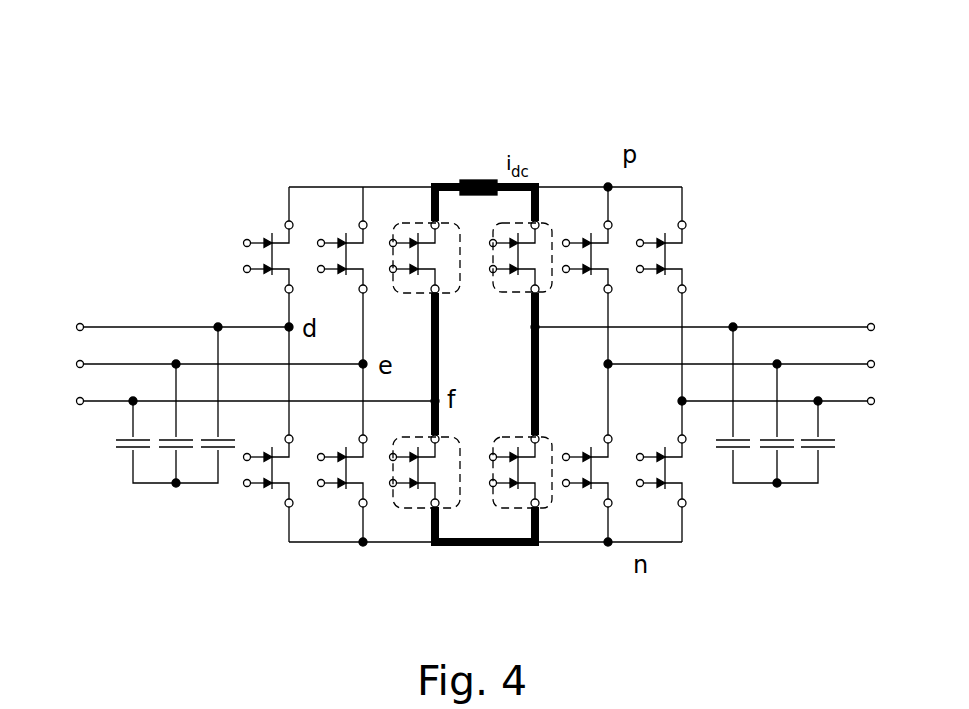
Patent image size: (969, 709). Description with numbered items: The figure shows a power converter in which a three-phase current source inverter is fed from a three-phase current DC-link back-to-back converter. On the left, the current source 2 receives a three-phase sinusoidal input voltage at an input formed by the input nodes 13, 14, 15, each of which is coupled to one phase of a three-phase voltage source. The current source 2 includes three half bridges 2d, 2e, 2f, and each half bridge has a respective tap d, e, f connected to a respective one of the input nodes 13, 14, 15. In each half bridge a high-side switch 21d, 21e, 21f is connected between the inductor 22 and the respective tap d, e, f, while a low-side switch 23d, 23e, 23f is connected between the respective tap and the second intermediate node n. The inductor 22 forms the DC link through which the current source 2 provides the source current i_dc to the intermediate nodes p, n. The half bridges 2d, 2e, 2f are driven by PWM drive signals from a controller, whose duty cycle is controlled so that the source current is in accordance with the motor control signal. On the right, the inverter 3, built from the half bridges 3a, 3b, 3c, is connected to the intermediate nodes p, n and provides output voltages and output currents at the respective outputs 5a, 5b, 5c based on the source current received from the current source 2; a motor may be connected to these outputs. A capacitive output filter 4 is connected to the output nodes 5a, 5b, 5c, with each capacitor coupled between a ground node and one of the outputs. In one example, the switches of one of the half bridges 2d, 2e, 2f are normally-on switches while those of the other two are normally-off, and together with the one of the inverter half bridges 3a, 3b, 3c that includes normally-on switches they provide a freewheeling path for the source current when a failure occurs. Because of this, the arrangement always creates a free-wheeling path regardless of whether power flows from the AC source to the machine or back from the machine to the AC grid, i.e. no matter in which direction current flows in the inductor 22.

The current source 2 is at (228, 148).
The inverter 3 is at (575, 148).
The output filter 4 is at (788, 322).
The inductor 22 is at (470, 148).
The input node 13 is at (167, 375).
The input node 14 is at (204, 393).
The input node 15 is at (240, 412).
The output 5a is at (721, 375).
The output 5b is at (758, 393).
The output 5c is at (794, 412).
The half bridge 2d is at (292, 555).
The half bridge 2e is at (364, 555).
The half bridge 2f is at (436, 555).
The half bridge 3a is at (535, 555).
The half bridge 3b is at (608, 555).
The half bridge 3c is at (682, 555).
The high-side switch 21d is at (282, 257).
The high-side switch 21e is at (356, 257).
The high-side switch 21f is at (425, 257).
The low-side switch 23d is at (282, 471).
The low-side switch 23e is at (356, 471).
The low-side switch 23f is at (425, 471).